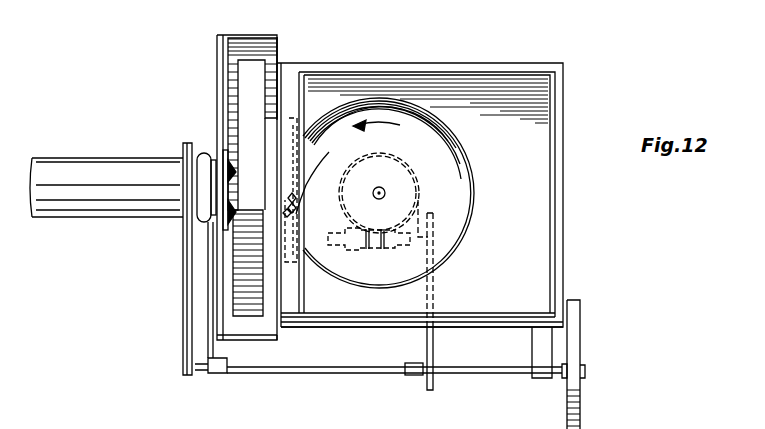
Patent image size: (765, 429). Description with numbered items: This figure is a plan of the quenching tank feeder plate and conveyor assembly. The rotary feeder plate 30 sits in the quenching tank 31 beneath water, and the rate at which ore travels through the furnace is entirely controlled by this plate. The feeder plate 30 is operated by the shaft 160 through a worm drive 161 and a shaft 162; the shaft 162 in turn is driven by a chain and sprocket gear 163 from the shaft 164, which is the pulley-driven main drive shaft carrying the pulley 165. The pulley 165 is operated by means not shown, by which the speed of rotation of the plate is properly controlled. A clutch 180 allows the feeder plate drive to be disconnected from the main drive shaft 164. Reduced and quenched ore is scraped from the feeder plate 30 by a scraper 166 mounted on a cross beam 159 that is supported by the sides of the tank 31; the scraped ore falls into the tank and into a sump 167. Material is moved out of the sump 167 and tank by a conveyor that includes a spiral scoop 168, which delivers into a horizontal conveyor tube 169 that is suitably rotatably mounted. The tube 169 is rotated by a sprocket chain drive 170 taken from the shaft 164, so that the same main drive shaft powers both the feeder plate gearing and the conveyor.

The rotary feeder plate 30 is at (478, 201).
The quenching tank 31 is at (548, 189).
The cross beam 159 is at (297, 90).
The shaft 160 is at (381, 187).
The worm drive 161 is at (414, 168).
The shaft 162 is at (422, 208).
The chain and sprocket gear 163 is at (435, 353).
The shaft 164 is at (490, 374).
The pulley 165 is at (575, 334).
The scraper 166 is at (324, 190).
The sump 167 is at (253, 327).
The spiral scoop 168 is at (248, 87).
The horizontal conveyor tube 169 is at (100, 172).
The sprocket chain drive 170 is at (184, 288).
The clutch 180 is at (416, 376).